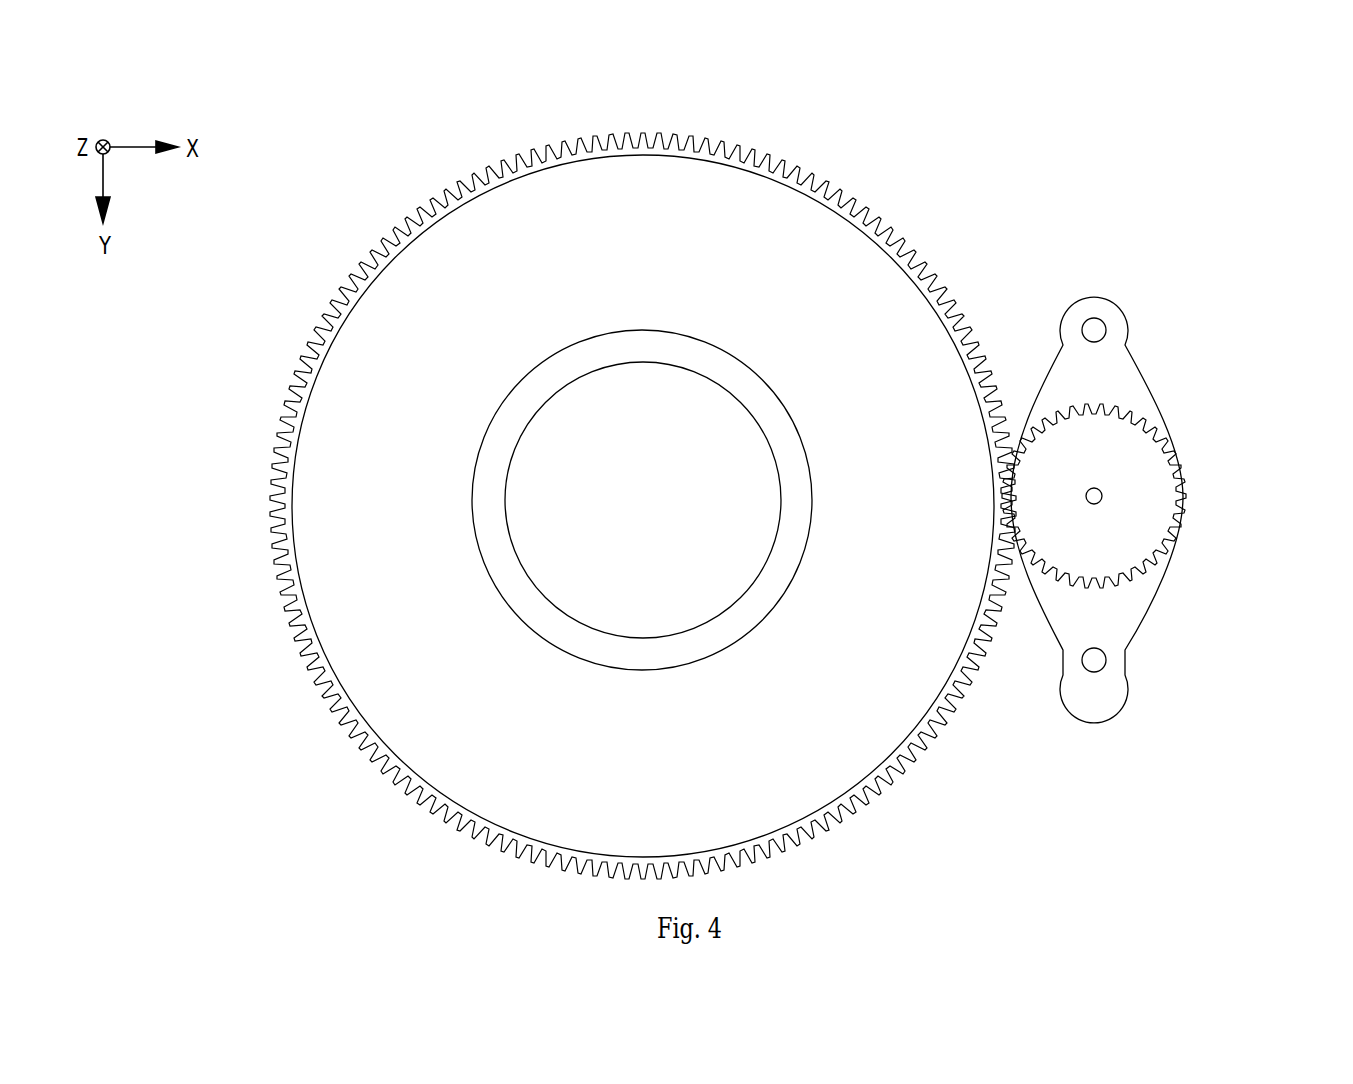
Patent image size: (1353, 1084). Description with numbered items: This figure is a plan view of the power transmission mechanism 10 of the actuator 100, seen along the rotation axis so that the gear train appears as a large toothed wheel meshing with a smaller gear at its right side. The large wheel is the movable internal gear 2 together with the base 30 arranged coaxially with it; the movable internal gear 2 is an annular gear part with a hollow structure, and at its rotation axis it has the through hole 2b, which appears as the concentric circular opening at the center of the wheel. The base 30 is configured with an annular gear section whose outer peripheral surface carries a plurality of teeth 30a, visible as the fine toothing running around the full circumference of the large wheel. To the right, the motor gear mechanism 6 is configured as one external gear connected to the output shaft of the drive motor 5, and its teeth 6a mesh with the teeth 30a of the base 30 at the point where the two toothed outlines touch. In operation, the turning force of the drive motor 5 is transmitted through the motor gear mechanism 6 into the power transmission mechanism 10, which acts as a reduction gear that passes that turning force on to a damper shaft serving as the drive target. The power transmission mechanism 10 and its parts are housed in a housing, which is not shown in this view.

The actuator 100 is at (1245, 120).
The power transmission mechanism 10 is at (968, 278).
The movable internal gear 2 is at (727, 213).
The through hole 2b is at (667, 637).
The base 30 is at (818, 178).
The tooth 30a is at (873, 213).
The drive motor 5 is at (1132, 397).
The motor gear mechanism 6 is at (1142, 457).
The tooth 6a is at (1148, 557).